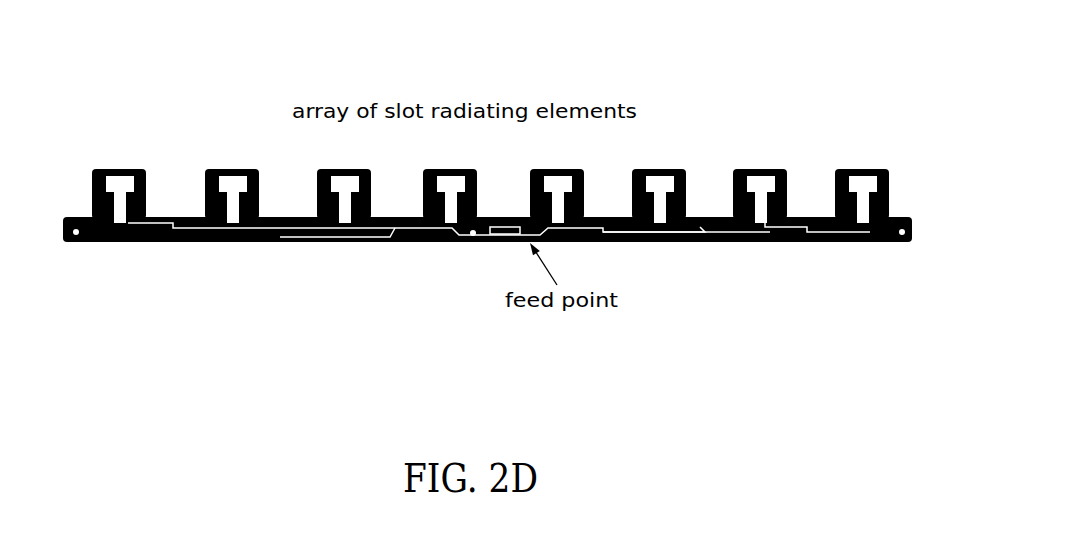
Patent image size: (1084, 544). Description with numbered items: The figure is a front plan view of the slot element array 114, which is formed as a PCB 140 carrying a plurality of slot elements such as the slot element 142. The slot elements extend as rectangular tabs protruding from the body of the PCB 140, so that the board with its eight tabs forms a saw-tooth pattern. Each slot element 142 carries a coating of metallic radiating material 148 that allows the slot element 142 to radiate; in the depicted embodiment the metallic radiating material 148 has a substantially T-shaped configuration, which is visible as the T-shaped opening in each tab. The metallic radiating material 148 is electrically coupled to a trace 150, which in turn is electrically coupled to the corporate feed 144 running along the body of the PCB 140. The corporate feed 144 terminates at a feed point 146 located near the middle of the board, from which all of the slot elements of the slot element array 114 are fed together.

The slot element array 114 is at (506, 166).
The PCB 140 is at (850, 237).
The slot element 142 is at (748, 172).
The corporate feed 144 is at (697, 237).
The feed point 146 is at (505, 246).
The metallic radiating material 148 is at (760, 193).
The trace 150 is at (780, 235).